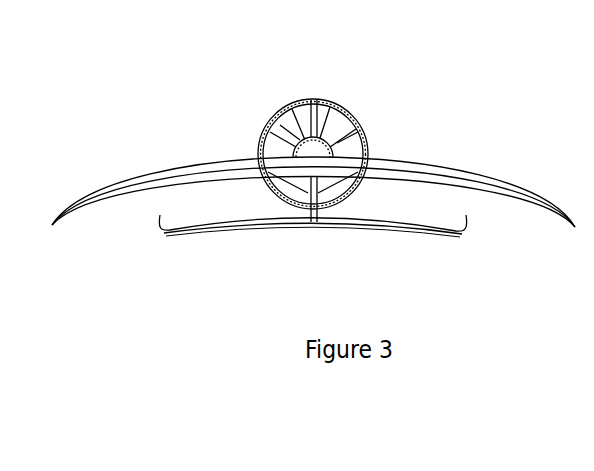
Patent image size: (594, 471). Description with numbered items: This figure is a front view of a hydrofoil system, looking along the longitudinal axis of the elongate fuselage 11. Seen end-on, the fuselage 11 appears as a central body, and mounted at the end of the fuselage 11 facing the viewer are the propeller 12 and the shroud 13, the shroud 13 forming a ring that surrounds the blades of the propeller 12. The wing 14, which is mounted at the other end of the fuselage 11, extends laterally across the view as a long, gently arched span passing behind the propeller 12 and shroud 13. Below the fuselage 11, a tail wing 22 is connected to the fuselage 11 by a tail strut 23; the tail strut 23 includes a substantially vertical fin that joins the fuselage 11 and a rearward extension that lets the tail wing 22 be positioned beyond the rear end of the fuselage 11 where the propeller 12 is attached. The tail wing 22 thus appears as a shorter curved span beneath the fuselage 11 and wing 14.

The fuselage 11 is at (302, 148).
The propeller 12 is at (293, 118).
The shroud 13 is at (345, 110).
The wing 14 is at (443, 163).
The tail wing 22 is at (385, 227).
The tail strut 23 is at (313, 220).